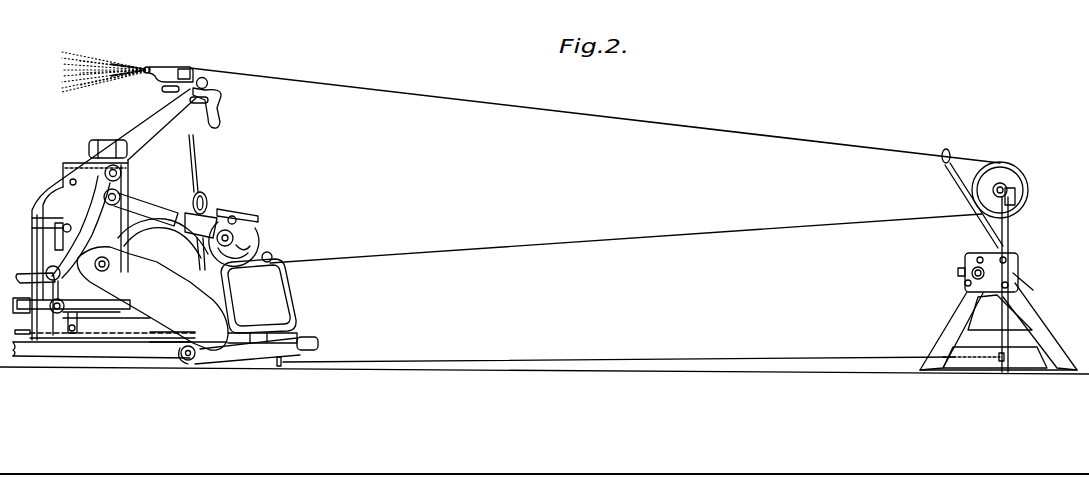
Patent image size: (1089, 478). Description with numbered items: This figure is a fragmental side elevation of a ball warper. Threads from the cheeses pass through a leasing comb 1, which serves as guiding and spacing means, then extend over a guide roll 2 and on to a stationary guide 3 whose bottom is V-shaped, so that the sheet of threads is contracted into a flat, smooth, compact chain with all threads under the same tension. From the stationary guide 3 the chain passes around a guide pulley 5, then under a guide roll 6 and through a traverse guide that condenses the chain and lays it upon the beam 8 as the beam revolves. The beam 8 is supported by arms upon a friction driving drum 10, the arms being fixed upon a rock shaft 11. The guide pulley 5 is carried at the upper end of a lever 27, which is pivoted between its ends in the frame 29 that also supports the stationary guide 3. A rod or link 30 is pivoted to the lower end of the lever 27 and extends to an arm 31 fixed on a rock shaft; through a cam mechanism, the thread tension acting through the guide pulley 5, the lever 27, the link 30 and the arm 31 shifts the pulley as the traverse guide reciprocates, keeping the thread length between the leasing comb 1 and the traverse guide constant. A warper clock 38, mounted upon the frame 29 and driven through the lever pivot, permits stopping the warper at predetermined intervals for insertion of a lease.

The leasing comb 1 is at (161, 64).
The guide roll 2 is at (183, 70).
The stationary guide 3 is at (946, 149).
The guide pulley 5 is at (1002, 163).
The guide roll 6 is at (269, 255).
The beam 8 is at (258, 231).
The friction driving drum 10 is at (152, 295).
The rock shaft 11 is at (128, 194).
The lever 27 is at (1000, 233).
The frame 29 is at (960, 318).
The rod or link 30 is at (795, 357).
The arm 31 is at (299, 338).
The warper clock 38 is at (1018, 264).